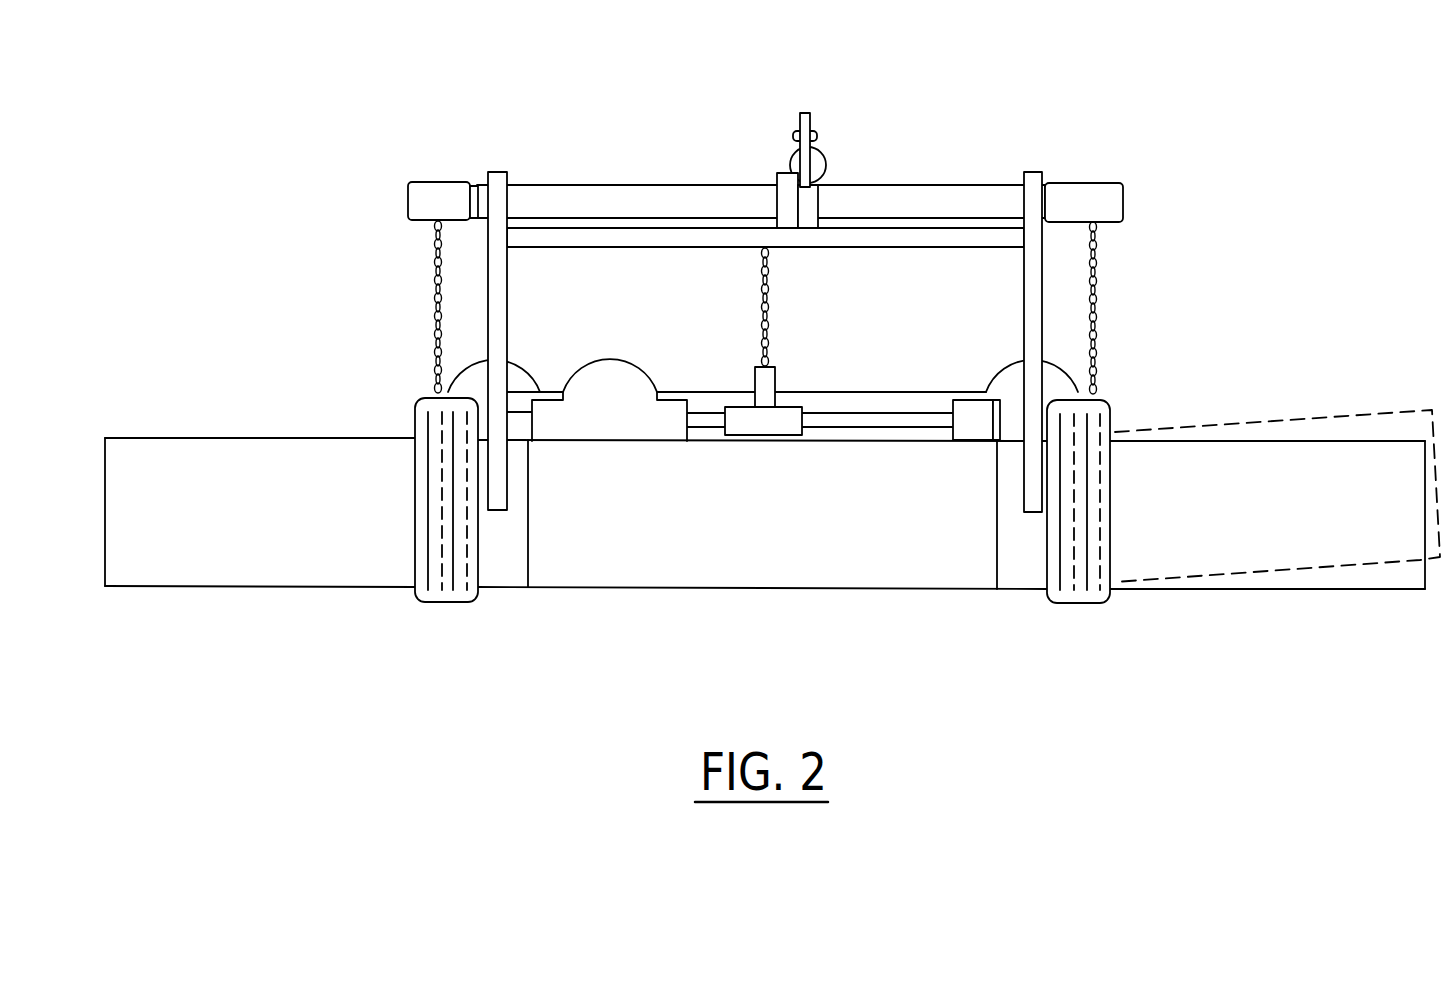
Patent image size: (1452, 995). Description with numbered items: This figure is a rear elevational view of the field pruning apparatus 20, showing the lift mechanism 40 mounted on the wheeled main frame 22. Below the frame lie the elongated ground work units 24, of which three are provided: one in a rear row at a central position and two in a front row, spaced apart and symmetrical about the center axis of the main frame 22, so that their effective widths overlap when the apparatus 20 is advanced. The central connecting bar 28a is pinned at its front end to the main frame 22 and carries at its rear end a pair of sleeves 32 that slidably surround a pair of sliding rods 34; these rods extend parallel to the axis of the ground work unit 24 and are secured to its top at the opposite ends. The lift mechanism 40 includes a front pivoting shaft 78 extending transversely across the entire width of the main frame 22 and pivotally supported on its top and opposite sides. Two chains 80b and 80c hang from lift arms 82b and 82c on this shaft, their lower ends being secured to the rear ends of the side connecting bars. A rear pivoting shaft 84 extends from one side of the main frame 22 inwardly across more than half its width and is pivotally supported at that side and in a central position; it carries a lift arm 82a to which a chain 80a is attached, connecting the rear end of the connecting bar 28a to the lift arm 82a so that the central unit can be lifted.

The field pruning apparatus 20 is at (842, 326).
The main frame 22 is at (917, 227).
The ground work unit 24 is at (290, 590).
The connecting bar 28a is at (776, 370).
The sleeve 32 is at (788, 405).
The sliding rod 34 is at (908, 413).
The lift mechanism 40 is at (806, 280).
The front pivoting shaft 78 is at (1058, 183).
The chain 80a is at (762, 185).
The chain 80b is at (1097, 298).
The chain 80c is at (432, 298).
The lift arm 82a is at (760, 298).
The lift arm 82b is at (1093, 183).
The lift arm 82c is at (442, 182).
The rear pivoting shaft 84 is at (568, 185).